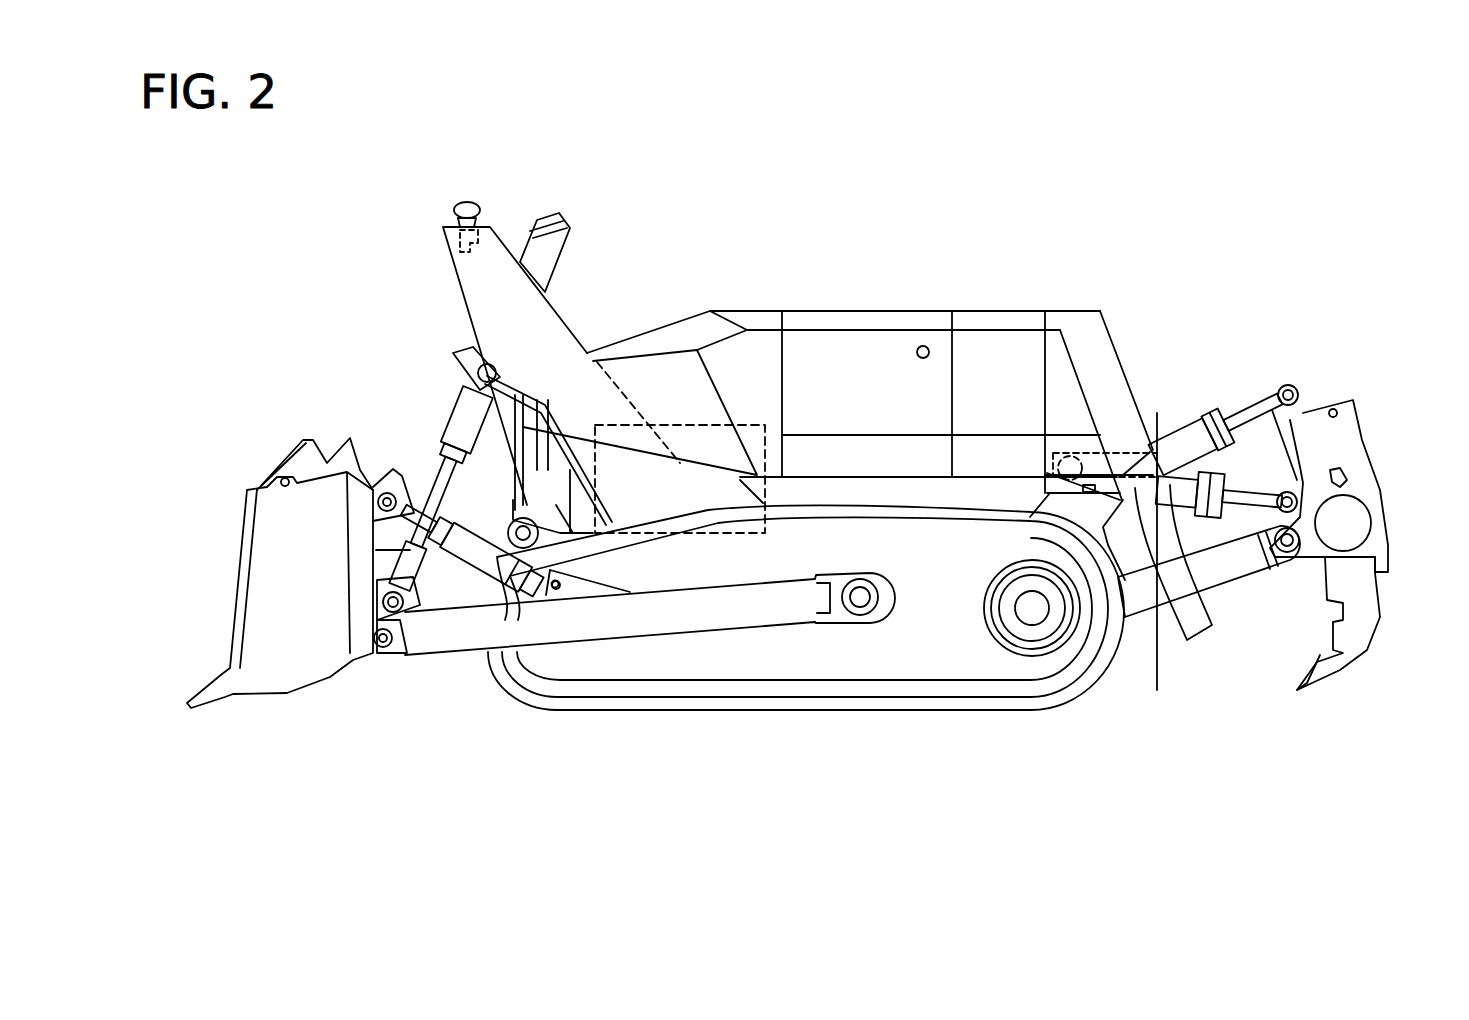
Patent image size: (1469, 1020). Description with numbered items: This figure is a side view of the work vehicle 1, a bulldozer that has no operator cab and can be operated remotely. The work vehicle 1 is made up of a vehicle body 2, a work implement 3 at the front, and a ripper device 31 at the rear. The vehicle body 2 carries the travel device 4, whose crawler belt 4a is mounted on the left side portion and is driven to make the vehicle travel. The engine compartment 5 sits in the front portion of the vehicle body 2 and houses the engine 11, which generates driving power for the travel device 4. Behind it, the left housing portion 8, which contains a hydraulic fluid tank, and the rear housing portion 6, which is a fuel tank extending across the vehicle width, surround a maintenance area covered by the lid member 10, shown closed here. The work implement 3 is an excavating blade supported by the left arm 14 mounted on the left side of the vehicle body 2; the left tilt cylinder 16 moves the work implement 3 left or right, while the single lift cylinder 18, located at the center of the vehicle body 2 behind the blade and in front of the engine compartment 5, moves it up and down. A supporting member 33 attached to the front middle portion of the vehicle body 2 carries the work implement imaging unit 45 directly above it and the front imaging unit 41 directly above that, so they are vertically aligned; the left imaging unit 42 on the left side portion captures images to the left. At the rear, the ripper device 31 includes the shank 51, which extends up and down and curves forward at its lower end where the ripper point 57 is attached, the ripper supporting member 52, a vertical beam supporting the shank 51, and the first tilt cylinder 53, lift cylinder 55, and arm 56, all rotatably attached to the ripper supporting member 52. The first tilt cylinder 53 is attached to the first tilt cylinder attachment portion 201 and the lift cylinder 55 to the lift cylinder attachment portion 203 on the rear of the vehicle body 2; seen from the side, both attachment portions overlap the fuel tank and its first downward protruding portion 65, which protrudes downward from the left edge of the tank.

The work vehicle 1 is at (955, 169).
The vehicle body 2 is at (893, 291).
The work implement 3 is at (275, 419).
The travel device 4 is at (913, 808).
The crawler belt 4a is at (813, 700).
The engine compartment 5 is at (690, 337).
The rear housing portion 6 is at (1107, 353).
The left housing portion 8 is at (837, 360).
The lid member 10 is at (797, 317).
The engine 11 is at (715, 540).
The left arm 14 is at (613, 613).
The left tilt cylinder 16 is at (460, 537).
The lift cylinder 18 is at (557, 265).
The ripper device 31 is at (1237, 381).
The supporting member 33 is at (467, 290).
The front imaging unit 41 is at (488, 233).
The left imaging unit 42 is at (927, 346).
The work implement imaging unit 45 is at (517, 258).
The shank 51 is at (1350, 628).
The ripper supporting member 52 is at (1322, 435).
The first tilt cylinder 53 is at (1183, 447).
The lift cylinder 55 is at (1200, 620).
The arm 56 is at (1227, 570).
The ripper point 57 is at (1307, 683).
The first downward protruding portion 65 is at (1140, 545).
The first tilt cylinder attachment portion 201 is at (1150, 470).
The lift cylinder attachment portion 203 is at (1077, 470).